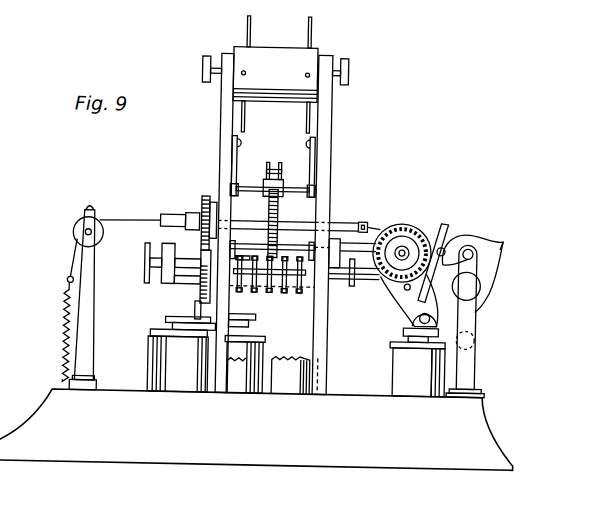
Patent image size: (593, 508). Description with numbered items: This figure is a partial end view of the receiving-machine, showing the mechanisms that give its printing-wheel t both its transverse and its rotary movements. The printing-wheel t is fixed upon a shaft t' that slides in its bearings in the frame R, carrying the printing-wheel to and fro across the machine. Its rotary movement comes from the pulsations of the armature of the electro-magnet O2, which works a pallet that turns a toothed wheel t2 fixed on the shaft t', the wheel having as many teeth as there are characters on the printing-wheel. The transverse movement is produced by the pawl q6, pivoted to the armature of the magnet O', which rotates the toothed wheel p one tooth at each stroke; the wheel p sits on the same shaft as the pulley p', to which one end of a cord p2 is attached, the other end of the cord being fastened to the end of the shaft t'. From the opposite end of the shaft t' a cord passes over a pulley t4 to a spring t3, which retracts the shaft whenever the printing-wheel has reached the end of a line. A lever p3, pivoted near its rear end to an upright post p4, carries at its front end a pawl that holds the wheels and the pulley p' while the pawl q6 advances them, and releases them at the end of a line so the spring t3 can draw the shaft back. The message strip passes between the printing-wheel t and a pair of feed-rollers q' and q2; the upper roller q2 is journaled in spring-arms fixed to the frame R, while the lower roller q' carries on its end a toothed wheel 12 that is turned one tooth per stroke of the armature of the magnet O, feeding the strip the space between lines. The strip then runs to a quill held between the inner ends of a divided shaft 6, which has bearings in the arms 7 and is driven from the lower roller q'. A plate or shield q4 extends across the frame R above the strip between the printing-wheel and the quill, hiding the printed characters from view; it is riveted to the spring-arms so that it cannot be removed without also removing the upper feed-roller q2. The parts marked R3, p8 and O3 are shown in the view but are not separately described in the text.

The frame R is at (271, 205).
The head block of frame R3 is at (275, 75).
The printing-wheel t is at (280, 223).
The shaft t' is at (299, 220).
The toothed wheel t2 is at (185, 222).
The spring t3 is at (59, 310).
The pulley t4 is at (115, 298).
The divided shaft 6 is at (172, 263).
The arms 7 is at (266, 285).
The toothed wheel 12 is at (200, 292).
The lower feed-roller q' is at (272, 287).
The upper feed-roller q2 is at (279, 247).
The shield q4 is at (247, 247).
The pawl q6 is at (408, 312).
The toothed wheel p is at (405, 282).
The pulley p' is at (433, 256).
The cord p2 is at (382, 229).
The lever p3 is at (472, 268).
The upright post p4 is at (478, 350).
The rods p8 is at (386, 263).
The magnet O is at (218, 363).
The magnet O' is at (417, 369).
The electro-magnet O2 is at (172, 354).
The block O3 is at (268, 375).